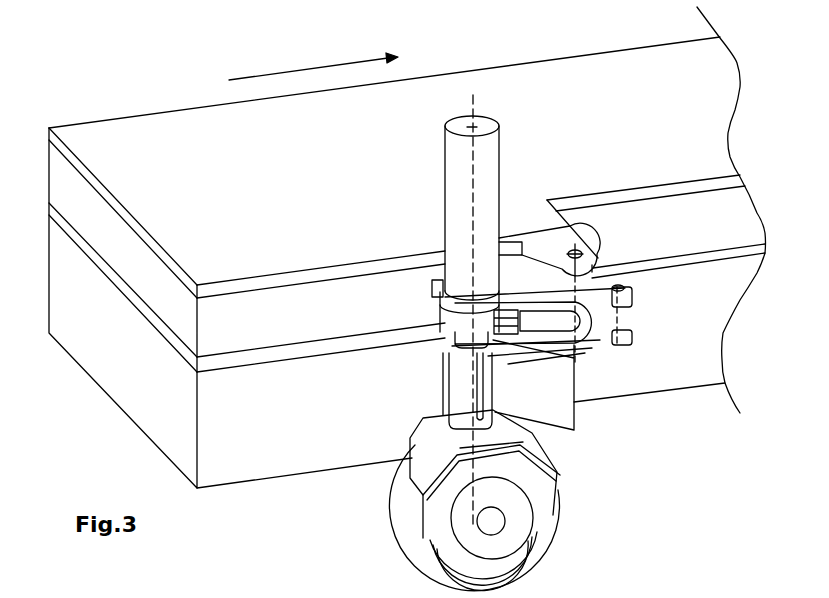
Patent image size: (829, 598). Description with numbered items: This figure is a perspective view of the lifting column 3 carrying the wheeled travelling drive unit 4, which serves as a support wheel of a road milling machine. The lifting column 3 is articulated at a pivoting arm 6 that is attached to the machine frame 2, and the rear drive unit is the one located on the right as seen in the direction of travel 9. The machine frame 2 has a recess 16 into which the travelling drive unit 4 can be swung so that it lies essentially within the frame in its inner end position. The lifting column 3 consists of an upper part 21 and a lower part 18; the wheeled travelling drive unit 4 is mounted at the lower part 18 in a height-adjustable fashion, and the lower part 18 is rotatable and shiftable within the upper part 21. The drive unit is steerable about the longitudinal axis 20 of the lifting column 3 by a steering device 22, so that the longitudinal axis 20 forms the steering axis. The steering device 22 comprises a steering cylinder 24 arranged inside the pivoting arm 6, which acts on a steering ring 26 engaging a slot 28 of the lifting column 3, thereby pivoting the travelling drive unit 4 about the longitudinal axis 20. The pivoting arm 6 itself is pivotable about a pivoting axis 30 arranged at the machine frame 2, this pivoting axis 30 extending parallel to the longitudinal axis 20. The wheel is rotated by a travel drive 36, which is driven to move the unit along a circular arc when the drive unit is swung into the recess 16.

The machine frame 2 is at (278, 204).
The lifting column 3 is at (457, 183).
The travelling drive unit 4 is at (577, 515).
The pivoting arm 6 is at (552, 352).
The direction of travel 9 is at (290, 70).
The recess 16 is at (636, 244).
The lower part 18 is at (460, 386).
The longitudinal axis 20 is at (500, 192).
The upper part 21 is at (444, 228).
The steering device 22 is at (400, 320).
The steering cylinder 24 is at (553, 313).
The steering ring 26 is at (440, 318).
The slot 28 is at (478, 394).
The pivoting axis 30 is at (620, 297).
The travel drive 36 is at (490, 519).